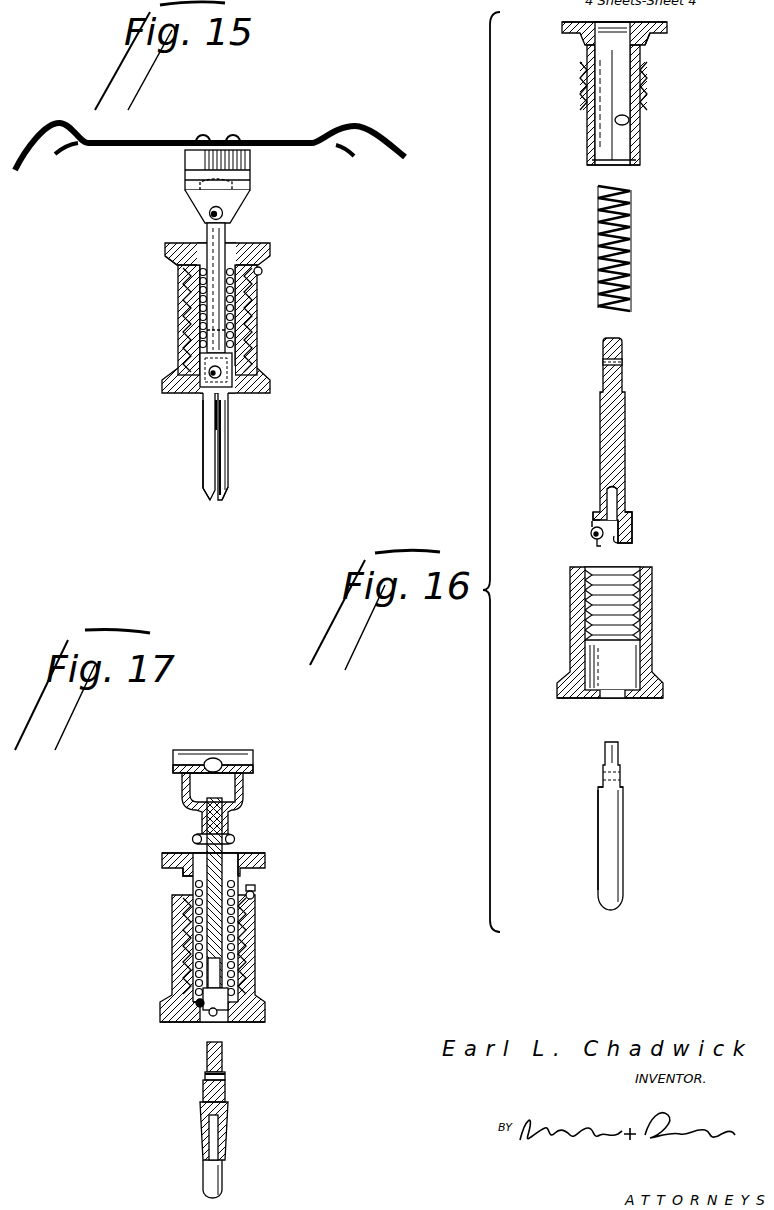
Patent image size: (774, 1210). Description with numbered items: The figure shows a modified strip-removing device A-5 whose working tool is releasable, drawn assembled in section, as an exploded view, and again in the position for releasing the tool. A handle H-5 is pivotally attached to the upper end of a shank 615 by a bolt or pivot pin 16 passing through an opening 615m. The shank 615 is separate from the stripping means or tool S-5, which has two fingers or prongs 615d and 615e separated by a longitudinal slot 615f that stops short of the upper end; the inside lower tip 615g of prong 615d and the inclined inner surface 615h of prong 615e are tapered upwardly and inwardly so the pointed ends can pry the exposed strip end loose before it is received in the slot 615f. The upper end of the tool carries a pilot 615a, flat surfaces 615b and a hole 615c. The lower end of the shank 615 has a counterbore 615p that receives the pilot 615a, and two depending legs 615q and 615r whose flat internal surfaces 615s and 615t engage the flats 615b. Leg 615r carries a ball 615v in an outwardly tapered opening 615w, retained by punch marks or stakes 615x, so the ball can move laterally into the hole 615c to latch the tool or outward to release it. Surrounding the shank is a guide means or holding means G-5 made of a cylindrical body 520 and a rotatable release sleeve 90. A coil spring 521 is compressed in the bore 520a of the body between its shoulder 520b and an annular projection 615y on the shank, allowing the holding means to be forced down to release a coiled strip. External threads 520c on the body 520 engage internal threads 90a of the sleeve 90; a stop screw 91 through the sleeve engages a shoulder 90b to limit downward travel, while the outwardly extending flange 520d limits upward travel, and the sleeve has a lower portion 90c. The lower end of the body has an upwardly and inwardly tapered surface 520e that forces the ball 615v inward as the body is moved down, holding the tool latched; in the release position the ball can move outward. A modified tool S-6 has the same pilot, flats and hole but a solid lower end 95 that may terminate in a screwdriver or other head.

In FIG. 15, the handle H-5 is at (134, 152).
In FIG. 17, the handle H-5 is at (213, 748).
In FIG. 15, the device A-5 is at (262, 301).
In FIG. 17, the device A-5 is at (255, 768).
In FIG. 15, the guide means or holding means G-5 is at (180, 286).
In FIG. 15, the stripping means or tool S-5 is at (232, 448).
In FIG. 16, the stripping means or tool S-5 is at (621, 852).
In FIG. 17, the modified tool S-6 is at (223, 1178).
In FIG. 15, the bolt or pivot pin 16 is at (224, 212).
In FIG. 17, the bolt or pivot pin 16 is at (234, 838).
In FIG. 15, the sleeve (rotatable release element) 90 is at (178, 306).
In FIG. 16, the sleeve (rotatable release element) 90 is at (650, 656).
In FIG. 17, the sleeve (rotatable release element) 90 is at (254, 936).
In FIG. 16, the internal threads 90a is at (645, 600).
In FIG. 17, the internal threads 90a is at (186, 944).
In FIG. 17, the shoulder or thread 90b is at (256, 884).
In FIG. 16, the body bottom flange 90c is at (628, 696).
In FIG. 17, the body bottom flange 90c is at (196, 1024).
In FIG. 15, the stop screw 91 is at (262, 270).
In FIG. 17, the stop screw 91 is at (256, 896).
In FIG. 17, the lower end (solid shank or rod) 95 is at (216, 1132).
In FIG. 15, the cylindrical body 520 is at (170, 250).
In FIG. 16, the cylindrical body 520 is at (632, 25).
In FIG. 17, the cylindrical body 520 is at (194, 896).
In FIG. 16, the bore 520a is at (628, 120).
In FIG. 17, the bore 520a is at (236, 854).
In FIG. 17, the shoulder 520b is at (196, 850).
In FIG. 16, the external threads 520c is at (650, 97).
In FIG. 17, the external threads 520c is at (186, 914).
In FIG. 15, the outwardly extending flange 520d is at (180, 276).
In FIG. 16, the outwardly extending flange 520d is at (644, 47).
In FIG. 17, the outwardly extending flange 520d is at (184, 874).
In FIG. 15, the upwardly and inwardly tapered surface 520e is at (242, 389).
In FIG. 16, the upwardly and inwardly tapered surface 520e is at (632, 172).
In FIG. 17, the upwardly and inwardly tapered surface 520e is at (196, 1000).
In FIG. 16, the coil spring 521 is at (636, 251).
In FIG. 17, the coil spring 521 is at (236, 951).
In FIG. 15, the shank 615 is at (226, 246).
In FIG. 16, the shank 615 is at (620, 406).
In FIG. 17, the shank 615 is at (224, 921).
In FIG. 15, the pilot 615a is at (248, 329).
In FIG. 16, the pilot 615a is at (606, 758).
In FIG. 17, the pilot 615a is at (223, 1054).
In FIG. 16, the flat surfaces 615b is at (603, 792).
In FIG. 17, the flat surfaces 615b is at (204, 1090).
In FIG. 16, the hole 615c is at (626, 776).
In FIG. 17, the hole 615c is at (206, 1078).
In FIG. 15, the finger or prong 615d is at (205, 474).
In FIG. 15, the finger or prong 615e is at (230, 465).
In FIG. 16, the finger or prong 615e is at (606, 816).
In FIG. 15, the longitudinal slot 615f is at (222, 427).
In FIG. 15, the inside lower tip 615g is at (212, 498).
In FIG. 15, the inclined inner surface 615h is at (226, 497).
In FIG. 16, the opening 615m is at (618, 362).
In FIG. 16, the counterbore 615p is at (620, 492).
In FIG. 16, the depending leg 615q is at (633, 525).
In FIG. 17, the depending leg 615q is at (229, 999).
In FIG. 16, the depending leg 615r is at (594, 518).
In FIG. 16, the flat internal surface 615s is at (622, 545).
In FIG. 16, the flat internal surface 615t is at (597, 547).
In FIG. 15, the ball 615v is at (206, 375).
In FIG. 16, the ball 615v is at (591, 533).
In FIG. 17, the ball 615v is at (226, 1013).
In FIG. 16, the opening (hole) 615w is at (593, 527).
In FIG. 15, the punch marks or stakes 615x is at (233, 375).
In FIG. 16, the annular shoulder or projection 615y is at (630, 511).
In FIG. 17, the annular shoulder or projection 615y is at (222, 976).